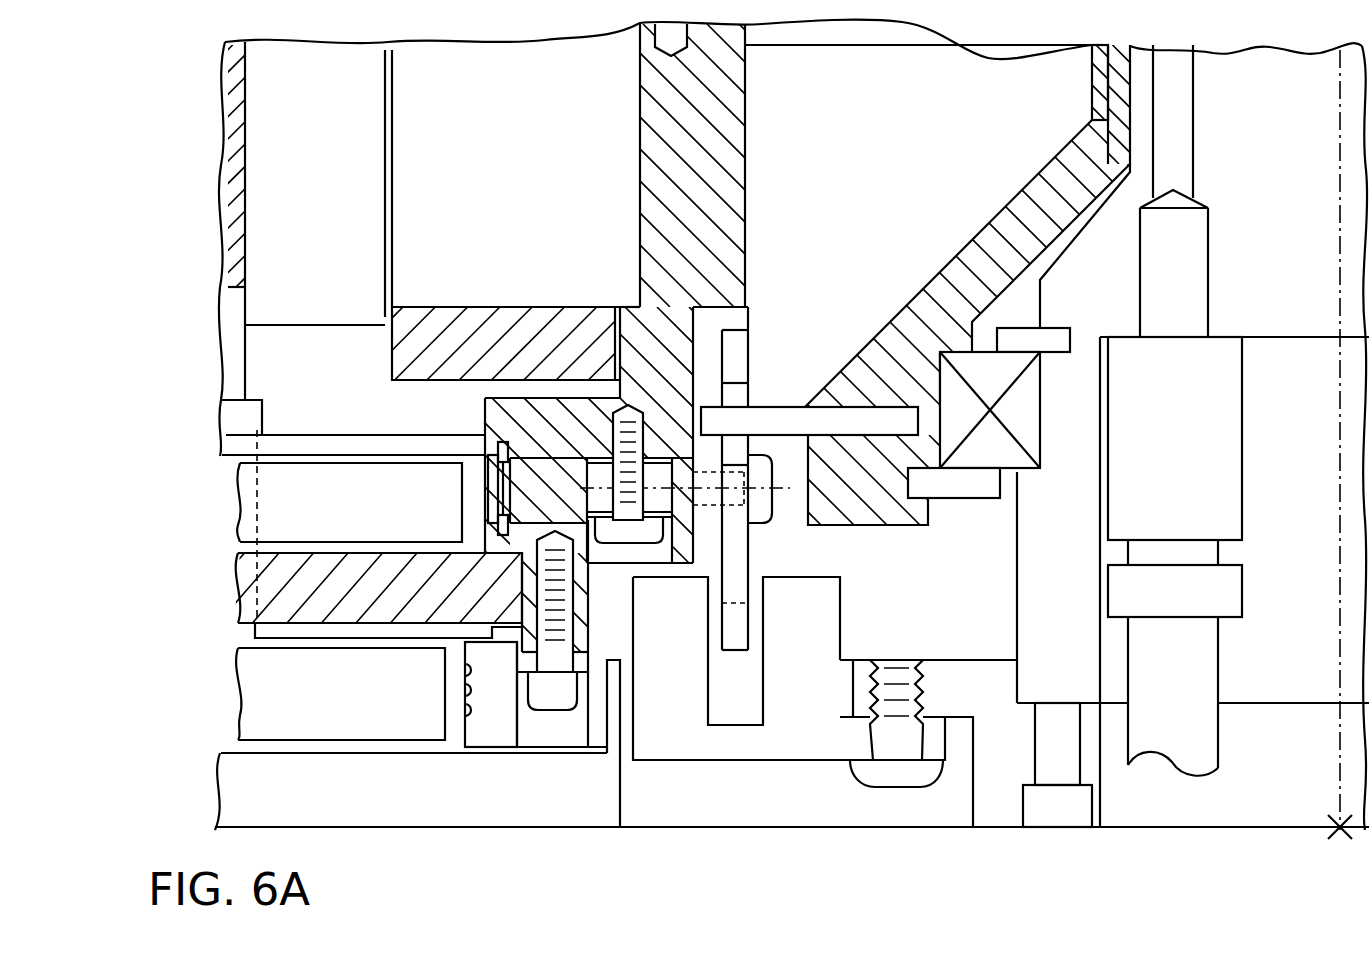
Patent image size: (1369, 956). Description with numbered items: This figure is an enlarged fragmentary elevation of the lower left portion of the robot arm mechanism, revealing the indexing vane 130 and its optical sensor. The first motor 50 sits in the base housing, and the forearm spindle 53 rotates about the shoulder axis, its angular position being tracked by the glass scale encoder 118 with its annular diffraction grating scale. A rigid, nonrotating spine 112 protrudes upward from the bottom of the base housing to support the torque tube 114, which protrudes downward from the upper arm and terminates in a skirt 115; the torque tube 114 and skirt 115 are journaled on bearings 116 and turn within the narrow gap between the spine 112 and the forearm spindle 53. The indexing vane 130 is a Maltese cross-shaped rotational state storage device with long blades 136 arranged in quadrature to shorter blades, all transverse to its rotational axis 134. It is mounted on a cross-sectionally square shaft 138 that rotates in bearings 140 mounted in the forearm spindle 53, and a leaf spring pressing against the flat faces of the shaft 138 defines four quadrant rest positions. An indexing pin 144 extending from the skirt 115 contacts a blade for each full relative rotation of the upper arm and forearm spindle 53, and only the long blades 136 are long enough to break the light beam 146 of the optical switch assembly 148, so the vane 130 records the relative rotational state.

The first motor 50 is at (511, 178).
The forearm spindle 53 is at (735, 164).
The spine 112 is at (1110, 307).
The torque tube 114 is at (1092, 72).
The skirt 115 is at (973, 270).
The bearings 116 is at (1030, 433).
The glass scale encoder 118 is at (389, 604).
The indexing vane 130 is at (778, 530).
The rotational axis 134 is at (583, 488).
The long blades 136 is at (740, 346).
The cross-sectionally square shaft 138 is at (602, 503).
The bearings 140 is at (568, 488).
The indexing pin 144 is at (778, 412).
The light beam 146 is at (748, 603).
The optical switch assembly 148 is at (697, 649).